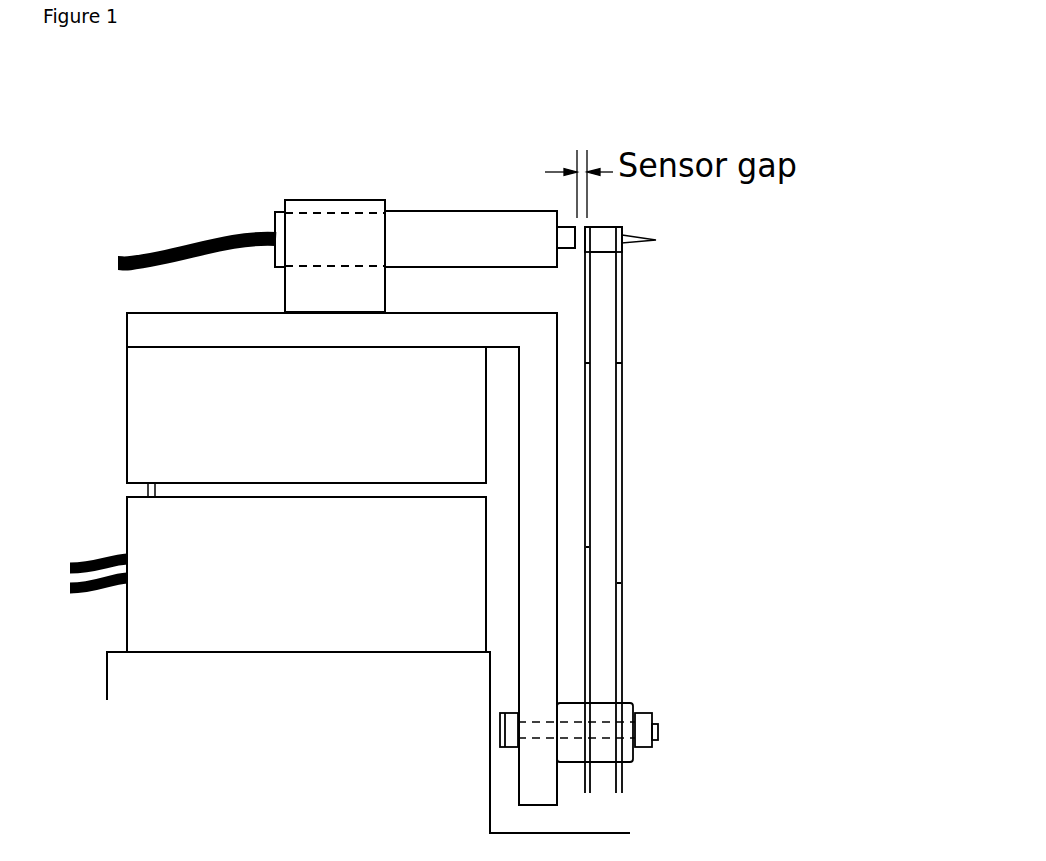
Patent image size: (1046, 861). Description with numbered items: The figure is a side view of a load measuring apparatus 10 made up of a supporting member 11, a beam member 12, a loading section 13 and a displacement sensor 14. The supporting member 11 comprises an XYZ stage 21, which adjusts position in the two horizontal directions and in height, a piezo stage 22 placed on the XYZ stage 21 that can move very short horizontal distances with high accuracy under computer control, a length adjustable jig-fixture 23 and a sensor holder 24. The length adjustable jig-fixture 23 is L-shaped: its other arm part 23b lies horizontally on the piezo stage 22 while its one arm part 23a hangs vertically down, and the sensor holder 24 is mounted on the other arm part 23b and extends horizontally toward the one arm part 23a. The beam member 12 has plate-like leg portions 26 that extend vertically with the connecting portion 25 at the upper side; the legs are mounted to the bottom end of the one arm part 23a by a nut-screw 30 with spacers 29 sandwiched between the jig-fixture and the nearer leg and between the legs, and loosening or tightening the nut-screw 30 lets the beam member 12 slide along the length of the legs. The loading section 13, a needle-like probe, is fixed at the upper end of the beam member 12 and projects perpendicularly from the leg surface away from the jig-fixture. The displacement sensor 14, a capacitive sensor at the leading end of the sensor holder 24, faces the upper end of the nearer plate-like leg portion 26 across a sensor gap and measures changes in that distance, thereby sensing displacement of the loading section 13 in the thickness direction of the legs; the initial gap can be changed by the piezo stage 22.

The load measuring apparatus 10 is at (816, 103).
The supporting member 11 is at (127, 518).
The beam member 12 is at (634, 390).
The loading section 13 is at (654, 249).
The displacement sensor 14 is at (565, 212).
The XYZ stage 21 is at (368, 742).
The piezo stage 22 is at (306, 422).
The length adjustable jig-fixture 23 is at (506, 684).
The one arm part 23a is at (538, 790).
The other arm part 23b is at (137, 330).
The sensor holder 24 is at (459, 196).
The connecting portion 25 is at (608, 223).
The plate-like leg portions 26 is at (593, 548).
The spacers 29 is at (584, 696).
The nut-screw 30 is at (667, 713).